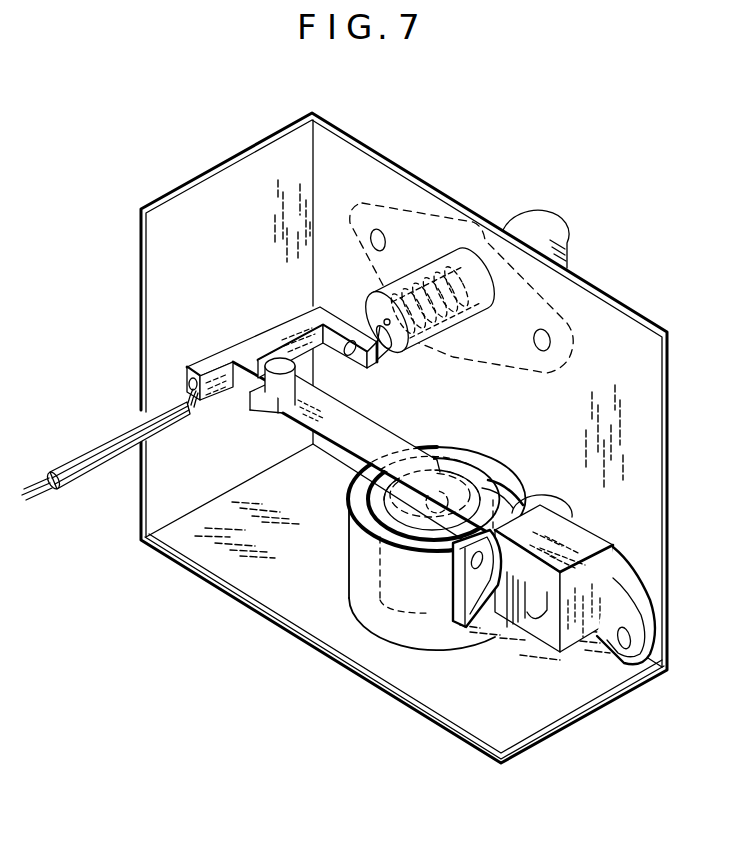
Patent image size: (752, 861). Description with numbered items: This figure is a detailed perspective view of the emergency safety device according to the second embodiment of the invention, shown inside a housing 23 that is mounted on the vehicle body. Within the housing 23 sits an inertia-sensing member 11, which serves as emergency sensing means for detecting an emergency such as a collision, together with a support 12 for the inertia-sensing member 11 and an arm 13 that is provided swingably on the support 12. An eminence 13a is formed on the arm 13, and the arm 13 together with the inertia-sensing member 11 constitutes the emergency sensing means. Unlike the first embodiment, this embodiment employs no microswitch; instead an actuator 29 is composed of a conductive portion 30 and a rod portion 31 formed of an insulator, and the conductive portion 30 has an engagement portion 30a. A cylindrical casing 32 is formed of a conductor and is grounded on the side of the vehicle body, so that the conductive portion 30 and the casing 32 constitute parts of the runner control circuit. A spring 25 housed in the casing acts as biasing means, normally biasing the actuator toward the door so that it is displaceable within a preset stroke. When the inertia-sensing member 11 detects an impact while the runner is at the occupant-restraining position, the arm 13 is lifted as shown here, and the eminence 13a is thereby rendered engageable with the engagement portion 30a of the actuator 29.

The inertia-sensing member 11 is at (387, 540).
The support 12 is at (427, 638).
The arm 13 is at (343, 440).
The eminence 13a is at (297, 376).
The housing 23 is at (655, 462).
The spring 25 is at (461, 288).
The actuator 29 is at (343, 328).
The conductive portion 30 is at (278, 330).
The engagement portion 30a is at (242, 385).
The rod portion 31 is at (383, 350).
The cylindrical casing 32 is at (410, 344).